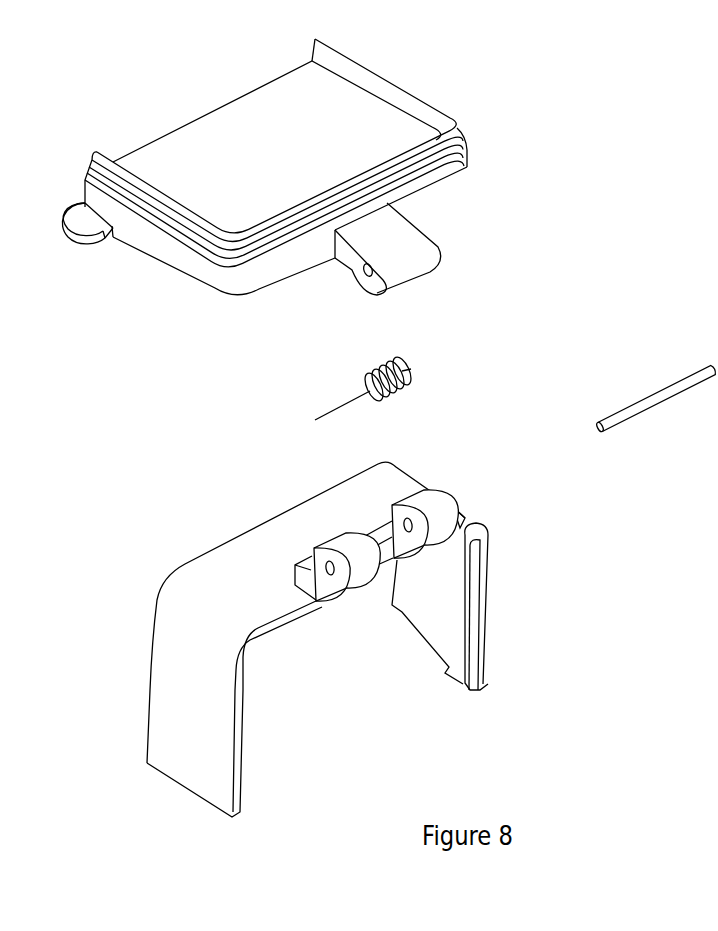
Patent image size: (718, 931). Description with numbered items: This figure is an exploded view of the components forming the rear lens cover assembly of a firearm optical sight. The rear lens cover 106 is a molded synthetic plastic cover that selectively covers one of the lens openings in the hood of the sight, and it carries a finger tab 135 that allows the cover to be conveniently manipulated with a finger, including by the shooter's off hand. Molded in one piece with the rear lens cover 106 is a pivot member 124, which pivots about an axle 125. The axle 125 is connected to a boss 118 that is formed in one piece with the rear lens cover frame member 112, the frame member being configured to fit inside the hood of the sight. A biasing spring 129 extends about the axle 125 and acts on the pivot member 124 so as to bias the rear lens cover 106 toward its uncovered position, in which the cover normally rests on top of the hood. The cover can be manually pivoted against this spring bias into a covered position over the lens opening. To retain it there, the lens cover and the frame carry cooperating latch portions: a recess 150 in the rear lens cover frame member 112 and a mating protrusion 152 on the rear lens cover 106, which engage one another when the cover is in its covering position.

The rear lens cover 106 is at (402, 84).
The mating protrusion 152 is at (460, 137).
The pivot member 124 is at (437, 247).
The finger tab 135 is at (81, 210).
The biasing spring 129 is at (403, 365).
The axle 125 is at (653, 392).
The rear lens cover frame member 112 is at (412, 477).
The boss 118 is at (450, 498).
The recess 150 is at (470, 665).